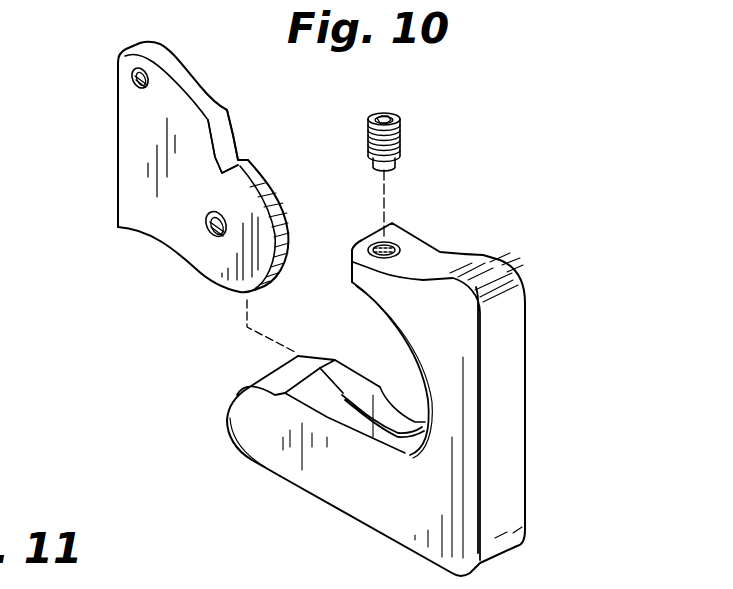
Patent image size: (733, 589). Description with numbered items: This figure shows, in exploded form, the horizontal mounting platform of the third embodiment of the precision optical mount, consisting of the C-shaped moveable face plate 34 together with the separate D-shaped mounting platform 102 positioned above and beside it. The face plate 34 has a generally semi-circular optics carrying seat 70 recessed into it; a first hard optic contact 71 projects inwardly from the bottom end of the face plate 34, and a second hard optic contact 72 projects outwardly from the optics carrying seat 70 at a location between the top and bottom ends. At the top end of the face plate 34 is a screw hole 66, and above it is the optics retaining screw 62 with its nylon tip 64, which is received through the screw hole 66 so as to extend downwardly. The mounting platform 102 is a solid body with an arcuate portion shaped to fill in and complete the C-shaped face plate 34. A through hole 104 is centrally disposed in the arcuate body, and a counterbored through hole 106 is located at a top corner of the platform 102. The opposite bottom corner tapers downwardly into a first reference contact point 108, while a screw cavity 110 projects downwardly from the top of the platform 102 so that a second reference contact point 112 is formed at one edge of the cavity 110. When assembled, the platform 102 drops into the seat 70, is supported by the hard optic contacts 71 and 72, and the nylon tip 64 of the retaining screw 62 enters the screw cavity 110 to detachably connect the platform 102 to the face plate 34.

The moveable face plate 34 is at (441, 384).
The optics retaining screw 62 is at (411, 137).
The nylon tip 64 is at (397, 161).
The screw hole 66 is at (394, 243).
The optics carrying seat 70 is at (326, 465).
The first hard optic contact 71 is at (303, 425).
The second hard optic contact 72 is at (400, 454).
The mounting platform 102 is at (165, 180).
The through hole 104 is at (208, 233).
The counterbored through hole 106 is at (133, 77).
The first reference contact point 108 is at (118, 228).
The screw cavity 110 is at (234, 143).
The second reference contact point 112 is at (246, 156).